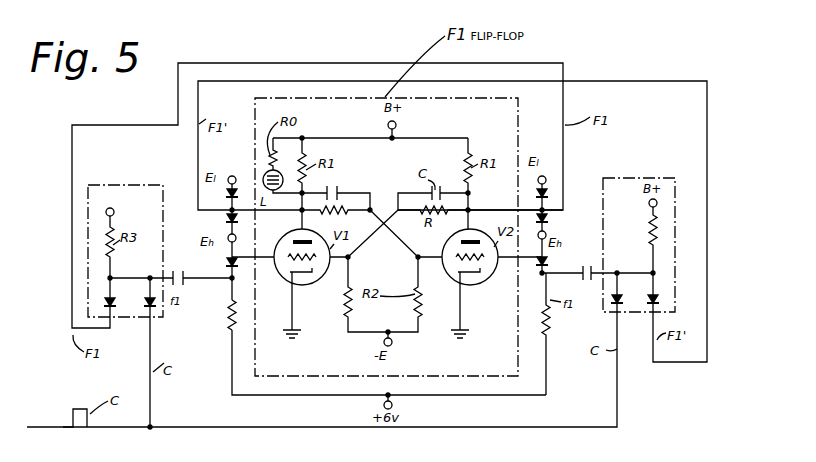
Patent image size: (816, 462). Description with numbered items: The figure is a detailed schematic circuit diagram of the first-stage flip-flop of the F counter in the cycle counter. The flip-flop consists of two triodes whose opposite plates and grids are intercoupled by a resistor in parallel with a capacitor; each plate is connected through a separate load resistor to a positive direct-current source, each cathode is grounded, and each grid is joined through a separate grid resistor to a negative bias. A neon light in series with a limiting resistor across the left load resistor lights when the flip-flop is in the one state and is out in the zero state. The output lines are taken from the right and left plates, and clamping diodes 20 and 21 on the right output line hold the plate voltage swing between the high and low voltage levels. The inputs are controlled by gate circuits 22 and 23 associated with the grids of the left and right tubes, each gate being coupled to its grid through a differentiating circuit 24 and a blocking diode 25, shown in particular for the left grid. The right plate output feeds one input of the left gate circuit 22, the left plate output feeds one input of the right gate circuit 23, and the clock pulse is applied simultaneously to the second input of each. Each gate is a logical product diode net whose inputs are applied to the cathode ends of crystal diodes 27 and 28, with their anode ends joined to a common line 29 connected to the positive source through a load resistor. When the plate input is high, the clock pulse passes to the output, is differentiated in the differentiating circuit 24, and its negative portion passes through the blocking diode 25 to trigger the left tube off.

The clamping diode 20 is at (546, 192).
The clamping diode 21 is at (548, 223).
The gate circuit 22 is at (93, 185).
The gate circuit 23 is at (606, 178).
The differentiating circuit 24 is at (228, 303).
The blocking diode 25 is at (226, 264).
The crystal diode 27 is at (111, 311).
The crystal diode 28 is at (151, 311).
The common line 29 is at (127, 278).